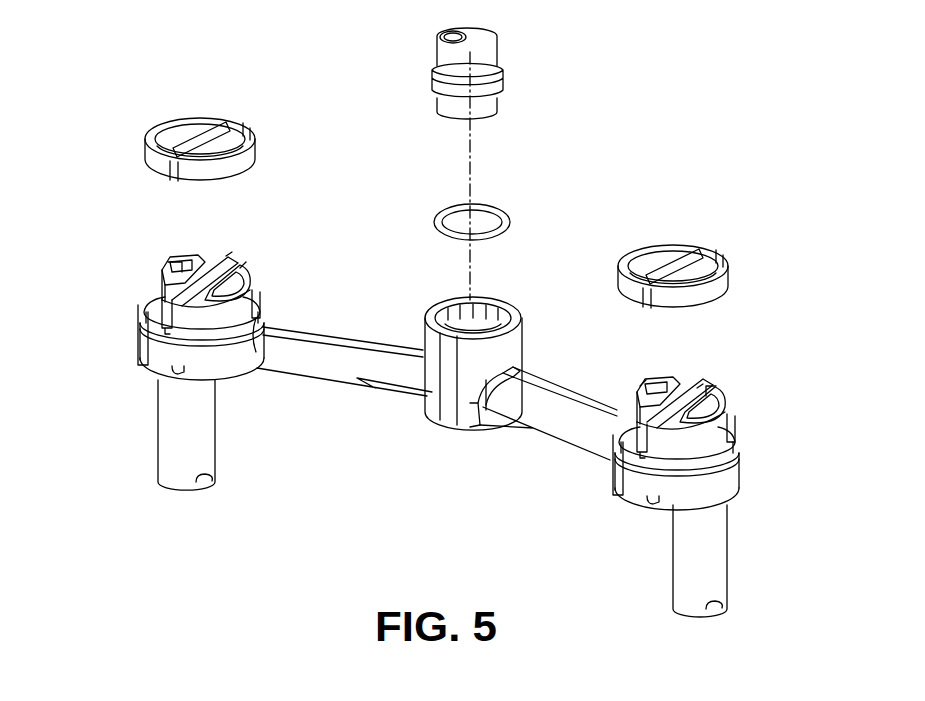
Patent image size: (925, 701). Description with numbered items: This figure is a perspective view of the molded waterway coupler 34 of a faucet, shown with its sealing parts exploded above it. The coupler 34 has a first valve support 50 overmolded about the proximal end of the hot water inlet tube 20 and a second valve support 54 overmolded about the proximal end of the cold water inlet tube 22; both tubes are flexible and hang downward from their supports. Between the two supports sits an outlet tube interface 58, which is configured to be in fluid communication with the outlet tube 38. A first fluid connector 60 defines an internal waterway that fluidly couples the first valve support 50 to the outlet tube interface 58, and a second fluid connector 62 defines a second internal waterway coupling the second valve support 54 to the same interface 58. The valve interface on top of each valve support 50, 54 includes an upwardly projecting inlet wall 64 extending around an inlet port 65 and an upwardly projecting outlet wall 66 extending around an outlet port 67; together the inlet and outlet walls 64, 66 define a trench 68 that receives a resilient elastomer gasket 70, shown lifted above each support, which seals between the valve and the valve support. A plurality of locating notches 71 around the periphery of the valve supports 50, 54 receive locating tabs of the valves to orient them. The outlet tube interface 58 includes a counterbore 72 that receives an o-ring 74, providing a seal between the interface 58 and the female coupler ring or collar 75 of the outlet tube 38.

The hot water inlet tube 20 is at (158, 426).
The cold water inlet tube 22 is at (728, 555).
The coupler 34 is at (602, 128).
The outlet tube 38 is at (437, 48).
The first valve support 50 is at (148, 352).
The second valve support 54 is at (735, 478).
The outlet tube interface 58 is at (434, 293).
The first fluid connector 60 is at (330, 362).
The second fluid connector 62 is at (553, 422).
The inlet wall 64 is at (193, 254).
The inlet port 65 is at (170, 262).
The outlet wall 66 is at (250, 274).
The outlet port 67 is at (243, 261).
The trench 68 is at (235, 244).
The resilient gasket 70 is at (175, 123).
The locating notches 71 is at (240, 335).
The counterbore 72 is at (496, 314).
The o-ring 74 is at (443, 212).
The collar 75 is at (503, 76).